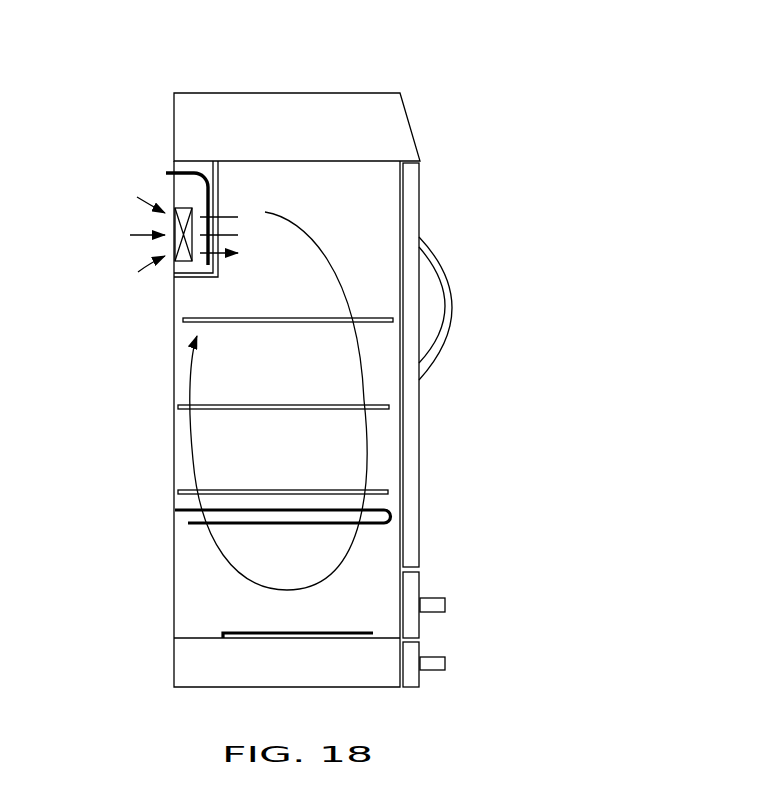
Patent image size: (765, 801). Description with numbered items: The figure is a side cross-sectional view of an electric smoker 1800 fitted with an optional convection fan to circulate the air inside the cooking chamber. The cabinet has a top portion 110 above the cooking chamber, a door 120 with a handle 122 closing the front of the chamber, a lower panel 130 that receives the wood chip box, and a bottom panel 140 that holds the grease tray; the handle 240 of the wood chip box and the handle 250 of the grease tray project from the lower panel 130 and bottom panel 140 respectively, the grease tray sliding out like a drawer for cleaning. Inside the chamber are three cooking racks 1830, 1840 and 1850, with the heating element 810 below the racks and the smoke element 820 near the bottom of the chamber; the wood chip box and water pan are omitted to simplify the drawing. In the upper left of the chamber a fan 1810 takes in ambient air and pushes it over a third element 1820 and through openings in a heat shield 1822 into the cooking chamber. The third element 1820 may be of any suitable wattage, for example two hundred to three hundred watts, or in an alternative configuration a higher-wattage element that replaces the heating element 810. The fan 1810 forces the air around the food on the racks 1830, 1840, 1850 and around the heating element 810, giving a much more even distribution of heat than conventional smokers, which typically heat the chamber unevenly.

The smoker 1800 is at (502, 78).
The top portion 110 is at (295, 93).
The door 120 is at (419, 212).
The handle 122 is at (438, 358).
The lower panel 130 is at (419, 590).
The bottom panel 140 is at (420, 650).
The handle of the wood chip box 240 is at (445, 605).
The handle of the grease tray 250 is at (445, 663).
The heating element 810 is at (257, 527).
The smoke element 820 is at (320, 633).
The fan 1810 is at (182, 262).
The third element 1820 is at (207, 190).
The heat shield 1822 is at (218, 185).
The cooking rack 1830 is at (257, 320).
The cooking rack 1840 is at (257, 407).
The cooking rack 1850 is at (257, 492).